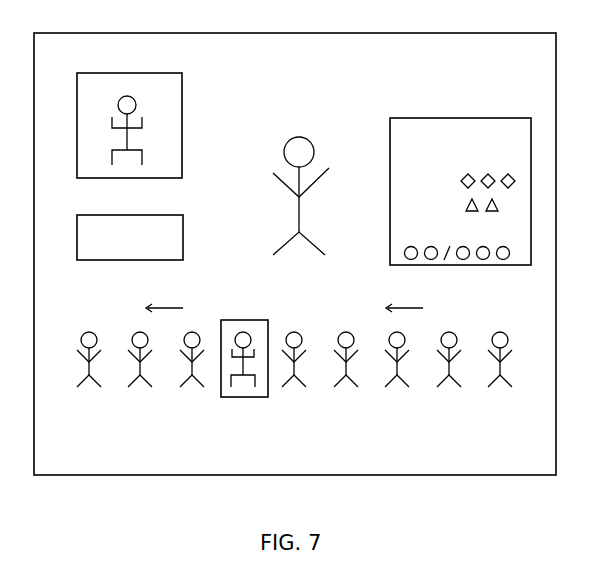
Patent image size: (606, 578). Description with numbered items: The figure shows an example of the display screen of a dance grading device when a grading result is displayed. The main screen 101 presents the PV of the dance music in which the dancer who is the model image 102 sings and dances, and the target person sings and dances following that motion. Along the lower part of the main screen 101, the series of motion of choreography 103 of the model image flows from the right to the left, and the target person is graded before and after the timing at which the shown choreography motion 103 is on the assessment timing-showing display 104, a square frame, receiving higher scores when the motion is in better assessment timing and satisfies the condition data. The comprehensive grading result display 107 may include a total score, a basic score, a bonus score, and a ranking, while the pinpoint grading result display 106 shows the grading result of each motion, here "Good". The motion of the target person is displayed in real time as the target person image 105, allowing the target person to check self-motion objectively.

The main screen 101 is at (483, 33).
The model image 102 is at (357, 73).
The series of motion of choreography 103 is at (295, 375).
The assessment timing-showing display 104 is at (252, 320).
The target person image 105 is at (165, 73).
The pinpoint grading result display 106 is at (165, 215).
The comprehensive grading result display 107 is at (478, 118).